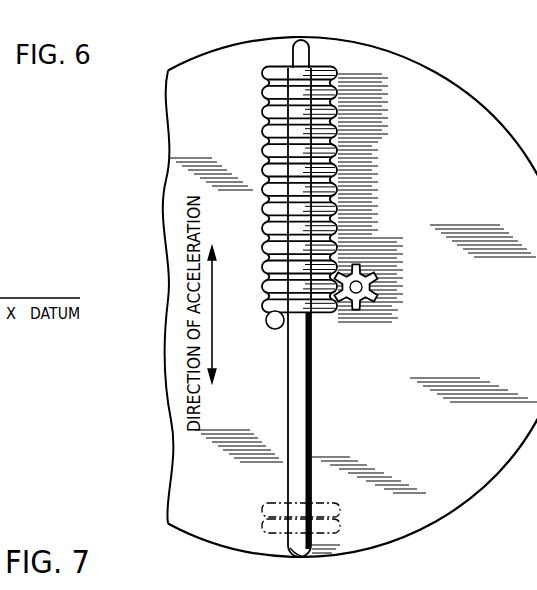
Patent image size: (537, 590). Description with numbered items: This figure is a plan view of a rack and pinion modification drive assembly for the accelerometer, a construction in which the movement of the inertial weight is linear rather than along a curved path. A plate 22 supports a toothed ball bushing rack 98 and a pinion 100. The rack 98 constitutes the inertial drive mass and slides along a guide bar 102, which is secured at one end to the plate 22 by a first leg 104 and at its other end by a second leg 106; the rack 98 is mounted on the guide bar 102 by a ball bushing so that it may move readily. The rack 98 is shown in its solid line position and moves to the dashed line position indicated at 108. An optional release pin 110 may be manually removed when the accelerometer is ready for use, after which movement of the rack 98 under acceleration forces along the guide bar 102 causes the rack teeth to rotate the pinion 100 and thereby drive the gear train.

The plate 22 is at (194, 124).
The toothed ball bushing rack 98 is at (265, 140).
The pinion 100 is at (366, 280).
The guide bar 102 is at (305, 443).
The first leg 104 is at (299, 48).
The second leg 106 is at (310, 558).
The dashed line position 108 is at (275, 535).
The release pin 110 is at (272, 322).